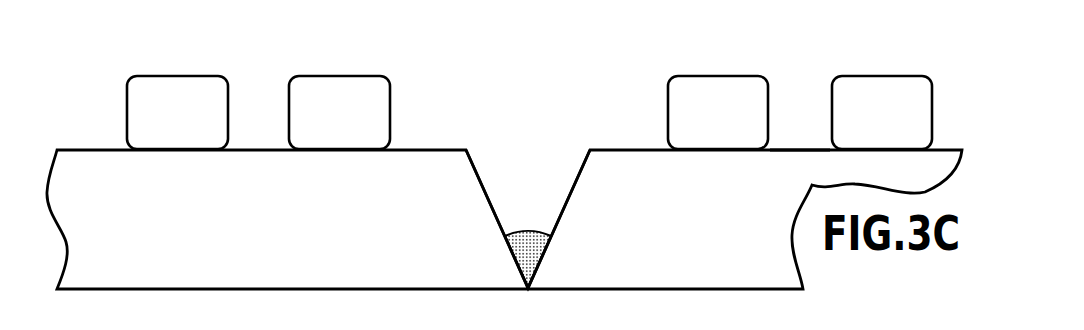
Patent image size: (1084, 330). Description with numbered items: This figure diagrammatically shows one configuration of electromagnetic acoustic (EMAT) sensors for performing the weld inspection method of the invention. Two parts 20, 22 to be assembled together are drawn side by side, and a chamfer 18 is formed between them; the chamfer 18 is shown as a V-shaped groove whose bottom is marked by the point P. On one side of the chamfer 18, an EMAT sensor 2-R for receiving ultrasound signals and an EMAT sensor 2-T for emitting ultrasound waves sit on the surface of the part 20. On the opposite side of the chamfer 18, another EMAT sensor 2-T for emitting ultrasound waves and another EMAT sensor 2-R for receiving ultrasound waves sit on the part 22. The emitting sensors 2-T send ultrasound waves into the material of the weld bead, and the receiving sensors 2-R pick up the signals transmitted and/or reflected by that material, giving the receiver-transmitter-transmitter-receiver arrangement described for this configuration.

The EMAT sensor for receiving ultrasound waves 2-R is at (177, 75).
The EMAT sensor for emitting ultrasound waves 2-T is at (339, 75).
The chamfer 18 is at (529, 166).
The part for assembling 20 is at (100, 163).
The part for assembling 22 is at (790, 168).
The groove bottom point P is at (527, 290).